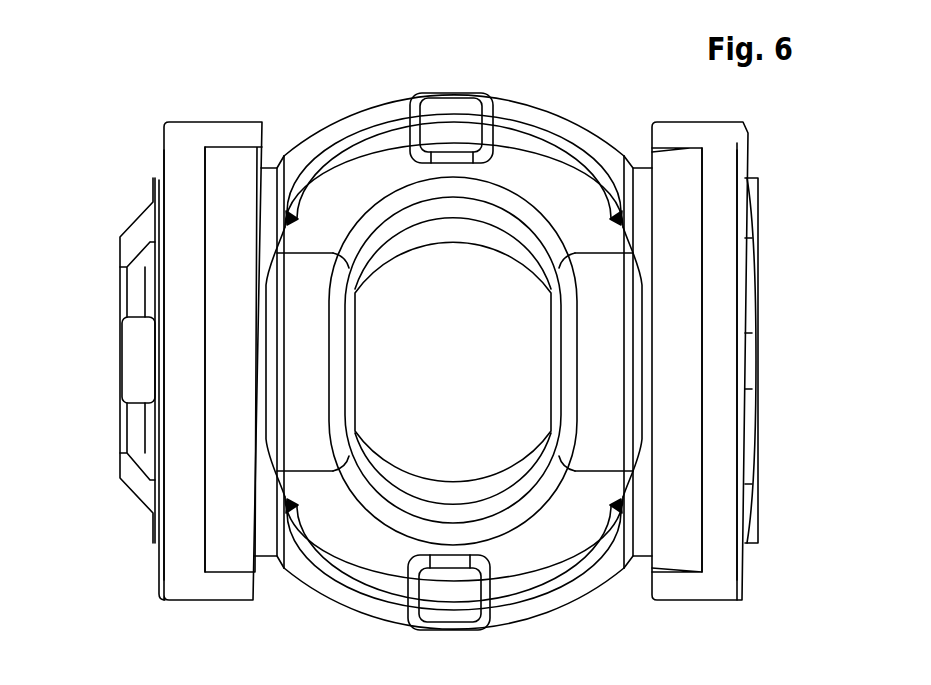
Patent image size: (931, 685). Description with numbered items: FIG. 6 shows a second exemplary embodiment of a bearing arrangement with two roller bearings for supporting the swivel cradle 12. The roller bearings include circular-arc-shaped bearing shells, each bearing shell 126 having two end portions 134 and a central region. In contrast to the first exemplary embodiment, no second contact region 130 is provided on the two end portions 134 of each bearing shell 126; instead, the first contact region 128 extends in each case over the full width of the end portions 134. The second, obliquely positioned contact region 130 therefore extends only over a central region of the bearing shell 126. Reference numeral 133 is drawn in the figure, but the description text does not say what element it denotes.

The swivel cradle 12 is at (403, 503).
The bearing shell 126 is at (159, 174).
The first contact region 128 is at (183, 528).
The second contact region 130 is at (248, 294).
The plate edge 133 is at (204, 382).
The end portions 134 is at (214, 122).